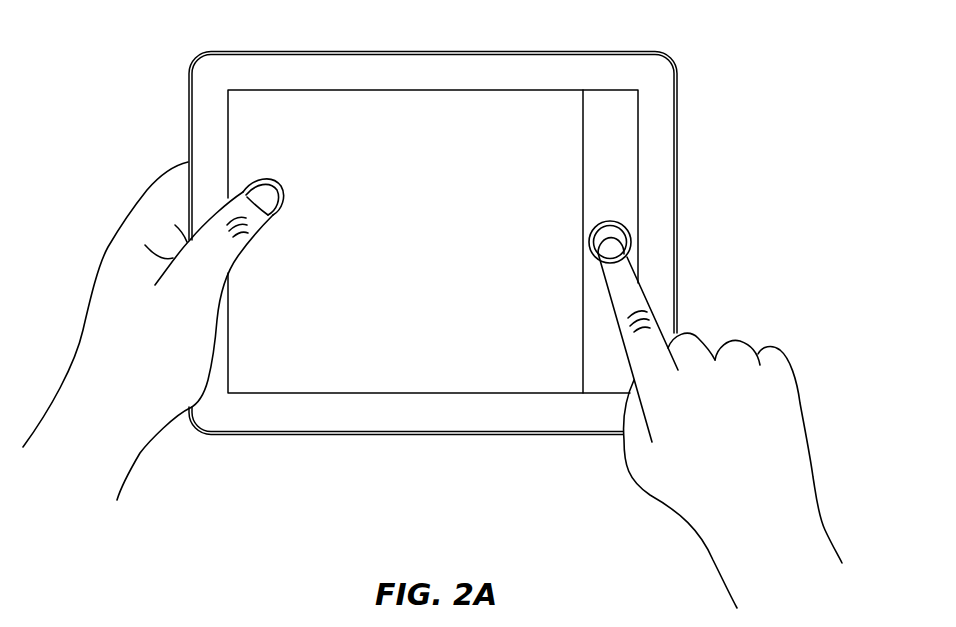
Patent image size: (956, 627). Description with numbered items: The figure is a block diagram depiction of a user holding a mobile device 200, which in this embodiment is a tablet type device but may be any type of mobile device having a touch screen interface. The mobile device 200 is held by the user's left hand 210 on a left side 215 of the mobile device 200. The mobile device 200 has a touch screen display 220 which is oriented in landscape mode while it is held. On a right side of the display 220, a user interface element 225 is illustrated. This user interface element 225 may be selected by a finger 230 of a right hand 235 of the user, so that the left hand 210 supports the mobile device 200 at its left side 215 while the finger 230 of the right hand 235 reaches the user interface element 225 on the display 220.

The mobile device 200 is at (631, 29).
The left hand 210 is at (108, 247).
The left side 215 is at (679, 203).
The touch screen display 220 is at (275, 375).
The user interface element 225 is at (590, 241).
The finger 230 is at (607, 291).
The right hand 235 is at (787, 355).